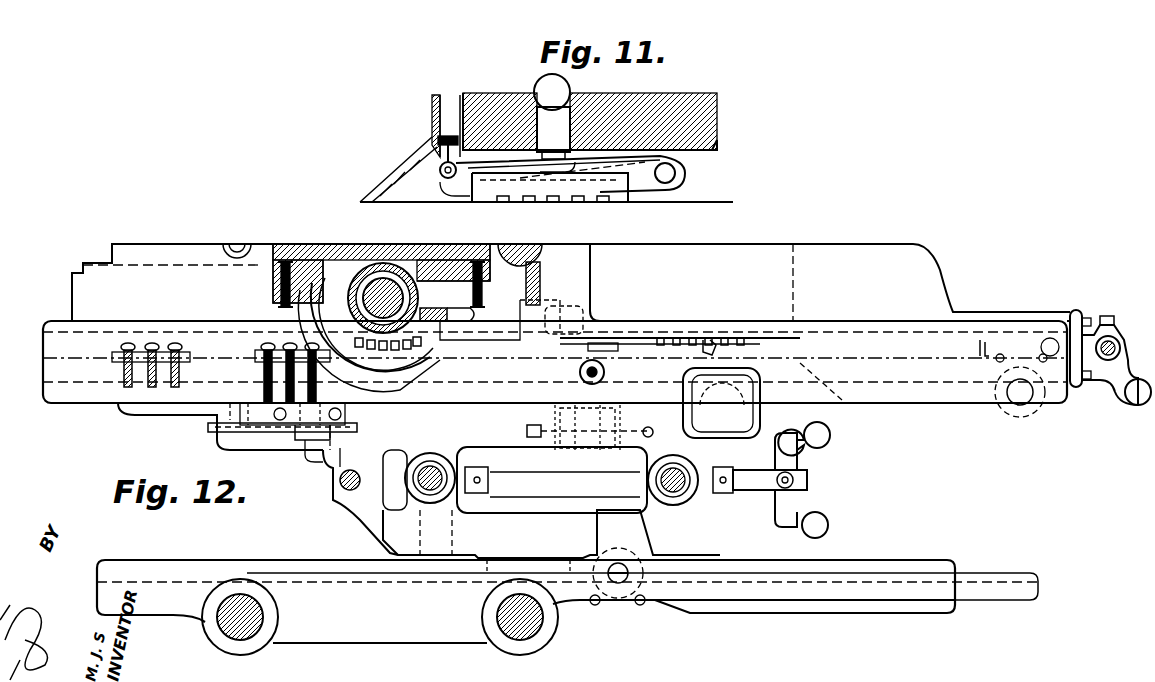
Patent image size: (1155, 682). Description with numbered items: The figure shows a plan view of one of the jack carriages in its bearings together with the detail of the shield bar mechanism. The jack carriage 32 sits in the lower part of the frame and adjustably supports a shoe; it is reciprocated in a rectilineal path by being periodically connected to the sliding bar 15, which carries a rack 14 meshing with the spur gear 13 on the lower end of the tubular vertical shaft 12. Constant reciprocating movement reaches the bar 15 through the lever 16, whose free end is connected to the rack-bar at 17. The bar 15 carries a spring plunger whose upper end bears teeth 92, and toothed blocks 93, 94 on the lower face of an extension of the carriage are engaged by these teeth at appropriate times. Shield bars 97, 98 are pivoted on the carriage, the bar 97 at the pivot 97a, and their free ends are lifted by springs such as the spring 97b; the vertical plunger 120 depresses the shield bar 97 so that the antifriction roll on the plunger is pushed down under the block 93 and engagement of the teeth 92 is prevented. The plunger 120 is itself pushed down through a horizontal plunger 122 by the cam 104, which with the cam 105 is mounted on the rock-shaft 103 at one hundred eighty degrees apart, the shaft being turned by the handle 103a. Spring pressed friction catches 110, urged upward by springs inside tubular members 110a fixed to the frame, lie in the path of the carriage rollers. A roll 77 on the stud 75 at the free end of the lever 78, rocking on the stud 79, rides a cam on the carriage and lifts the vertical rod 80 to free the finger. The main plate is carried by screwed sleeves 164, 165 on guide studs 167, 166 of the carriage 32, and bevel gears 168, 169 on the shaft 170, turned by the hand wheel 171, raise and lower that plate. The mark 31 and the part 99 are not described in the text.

In FIG. 12, the tubular vertical shaft 12 is at (337, 352).
In FIG. 12, the spur gear 13 is at (352, 318).
In FIG. 12, the rack 14 is at (395, 360).
In FIG. 12, the sliding bar 15 is at (555, 376).
In FIG. 12, the lever 16 is at (778, 398).
In FIG. 12, the rack-bar connection 17 is at (732, 352).
In FIG. 12, the clip 31 is at (987, 349).
In FIG. 12, the jack carriage 32 is at (362, 497).
In FIG. 12, the stud 75 is at (425, 352).
In FIG. 12, the roll 77 is at (450, 345).
In FIG. 12, the lever 78 is at (510, 336).
In FIG. 12, the stud 79 is at (548, 338).
In FIG. 12, the vertical rod 80 is at (478, 336).
In FIG. 12, the teeth 92 is at (598, 382).
In FIG. 11, the toothed block 93 is at (612, 185).
In FIG. 12, the toothed block 94 is at (304, 441).
In FIG. 11, the shield bar 97 is at (465, 180).
In FIG. 12, the shield bar 97 is at (527, 431).
In FIG. 11, the pivot 97a is at (680, 175).
In FIG. 11, the spring 97b is at (440, 140).
In FIG. 12, the shield bar 98 is at (210, 428).
In FIG. 12, the spring 99 is at (664, 425).
In FIG. 12, the rock-shaft 103 is at (655, 338).
In FIG. 12, the handle 103a is at (1134, 398).
In FIG. 12, the cam 104 is at (606, 340).
In FIG. 12, the cam 105 is at (292, 342).
In FIG. 12, the spring pressed friction catch 110 is at (655, 577).
In FIG. 12, the tubular member 110a is at (1018, 398).
In FIG. 11, the vertical plunger 120 is at (572, 122).
In FIG. 11, the horizontal plunger 122 is at (552, 90).
In FIG. 12, the screwed sleeve 164 is at (412, 507).
In FIG. 12, the screwed sleeve 165 is at (683, 506).
In FIG. 12, the guide stud 166 is at (700, 510).
In FIG. 12, the guide stud 167 is at (445, 455).
In FIG. 12, the bevel gear 168 is at (728, 490).
In FIG. 12, the bevel gear 169 is at (470, 468).
In FIG. 12, the shaft 170 is at (798, 462).
In FIG. 12, the hand wheel 171 is at (828, 526).